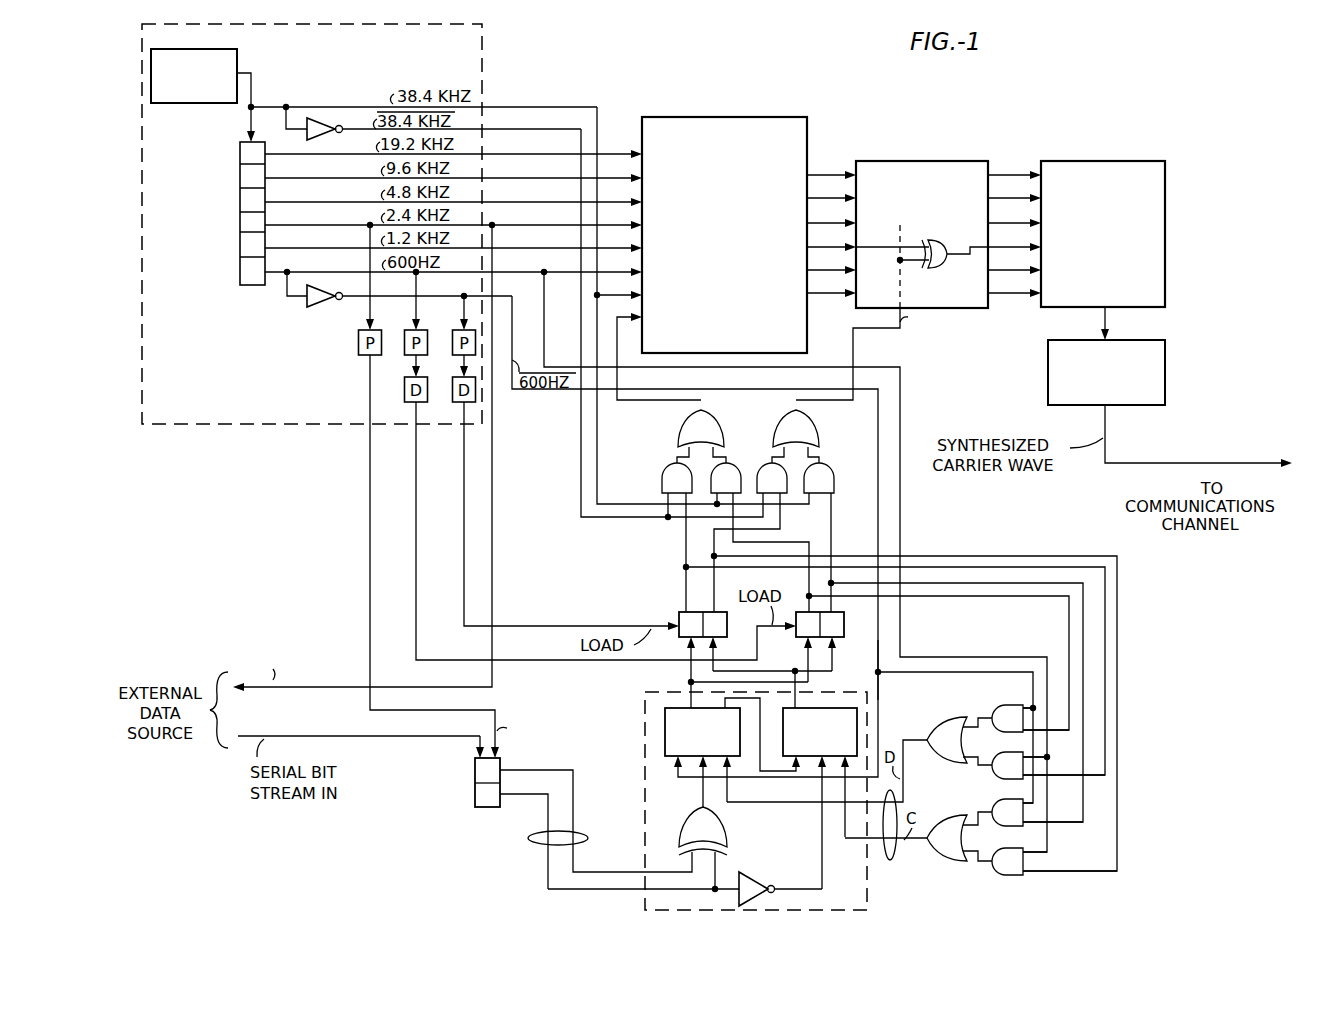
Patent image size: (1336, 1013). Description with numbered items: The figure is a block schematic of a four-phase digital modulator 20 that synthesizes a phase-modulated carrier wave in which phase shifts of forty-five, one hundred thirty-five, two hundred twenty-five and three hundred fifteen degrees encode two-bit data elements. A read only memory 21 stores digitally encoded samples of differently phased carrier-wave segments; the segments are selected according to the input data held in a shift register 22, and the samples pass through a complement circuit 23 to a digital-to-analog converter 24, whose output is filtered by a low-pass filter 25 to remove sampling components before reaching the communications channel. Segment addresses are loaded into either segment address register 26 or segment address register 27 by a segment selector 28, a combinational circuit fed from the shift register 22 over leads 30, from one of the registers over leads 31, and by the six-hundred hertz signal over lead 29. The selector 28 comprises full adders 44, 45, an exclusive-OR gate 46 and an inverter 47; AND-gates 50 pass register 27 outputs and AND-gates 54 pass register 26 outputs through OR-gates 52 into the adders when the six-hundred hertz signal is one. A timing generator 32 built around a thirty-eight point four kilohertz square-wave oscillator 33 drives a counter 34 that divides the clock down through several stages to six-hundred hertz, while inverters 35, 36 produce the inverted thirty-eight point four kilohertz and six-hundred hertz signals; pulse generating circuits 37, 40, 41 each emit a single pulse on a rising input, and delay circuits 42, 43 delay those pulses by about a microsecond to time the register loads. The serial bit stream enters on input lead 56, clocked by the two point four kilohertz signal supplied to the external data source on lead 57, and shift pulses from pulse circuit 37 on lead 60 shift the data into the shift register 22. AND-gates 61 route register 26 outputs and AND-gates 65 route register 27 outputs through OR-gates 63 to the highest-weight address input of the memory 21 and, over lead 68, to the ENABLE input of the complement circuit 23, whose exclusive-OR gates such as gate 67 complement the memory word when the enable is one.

The modulator 20 is at (931, 521).
The memory 21 is at (732, 117).
The shift register 22 is at (475, 783).
The complement circuit 23 is at (940, 160).
The digital-to-analog converter 24 is at (1107, 160).
The low-pass filter 25 is at (1167, 378).
The segment address register 26 is at (678, 612).
The segment address register 27 is at (799, 637).
The segment selector 28 is at (645, 795).
The lead 29 is at (880, 709).
The leads 30 is at (541, 839).
The leads 31 is at (889, 849).
The timing generator 32 is at (484, 84).
The square-wave oscillator 33 is at (208, 104).
The counter 34 is at (240, 152).
The inverter 35 is at (306, 134).
The inverter 36 is at (306, 303).
The pulse generating circuit 37 is at (358, 342).
The pulse generating circuit 40 is at (405, 344).
The pulse generating circuit 41 is at (453, 344).
The delay circuit 42 is at (408, 403).
The delay circuit 43 is at (458, 403).
The full adder 44 is at (666, 750).
The full adder 45 is at (832, 708).
The exclusive-OR gate 46 is at (721, 823).
The inverter 47 is at (751, 874).
The AND-gates 50 is at (1007, 705).
The OR-gates 52 is at (949, 717).
The AND-gates 54 is at (990, 773).
The input lead 56 is at (278, 736).
The lead 57 is at (311, 687).
The lead 60 is at (369, 548).
The AND-gates 61 is at (662, 483).
The OR-gates 63 is at (684, 431).
The AND-gates 65 is at (735, 462).
The exclusive-OR gate 67 is at (944, 265).
The lead 68 is at (855, 347).